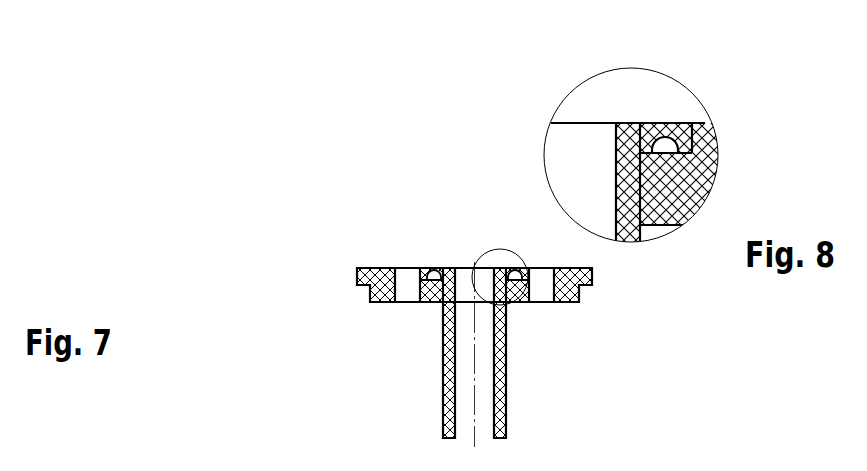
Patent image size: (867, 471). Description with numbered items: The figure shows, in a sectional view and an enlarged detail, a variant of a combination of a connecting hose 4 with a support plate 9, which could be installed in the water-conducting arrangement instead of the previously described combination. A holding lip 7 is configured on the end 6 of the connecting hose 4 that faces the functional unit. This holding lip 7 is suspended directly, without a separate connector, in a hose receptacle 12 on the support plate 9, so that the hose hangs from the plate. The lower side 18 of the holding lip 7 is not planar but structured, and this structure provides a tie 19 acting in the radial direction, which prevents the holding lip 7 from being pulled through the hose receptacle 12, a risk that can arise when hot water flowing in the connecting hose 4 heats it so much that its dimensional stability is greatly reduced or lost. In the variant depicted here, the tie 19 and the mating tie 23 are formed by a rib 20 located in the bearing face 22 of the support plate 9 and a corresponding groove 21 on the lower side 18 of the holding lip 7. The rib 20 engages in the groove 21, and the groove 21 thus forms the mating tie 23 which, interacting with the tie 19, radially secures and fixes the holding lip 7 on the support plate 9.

In FIG. 7, the connecting hose 4 is at (505, 383).
In FIG. 8, the connecting hose 4 is at (655, 186).
In FIG. 7, the end of the connecting hose 6 is at (423, 280).
In FIG. 8, the holding lip 7 is at (642, 128).
In FIG. 7, the support plate 9 is at (362, 287).
In FIG. 8, the support plate 9 is at (617, 183).
In FIG. 7, the hose receptacle 12 is at (431, 306).
In FIG. 8, the lower side of the holding lip 18 is at (670, 171).
In FIG. 8, the tie 19 is at (678, 126).
In FIG. 8, the rib 20 is at (661, 146).
In FIG. 8, the groove 21 is at (663, 140).
In FIG. 8, the bearing face 22 is at (635, 131).
In FIG. 8, the mating tie 23 is at (665, 160).